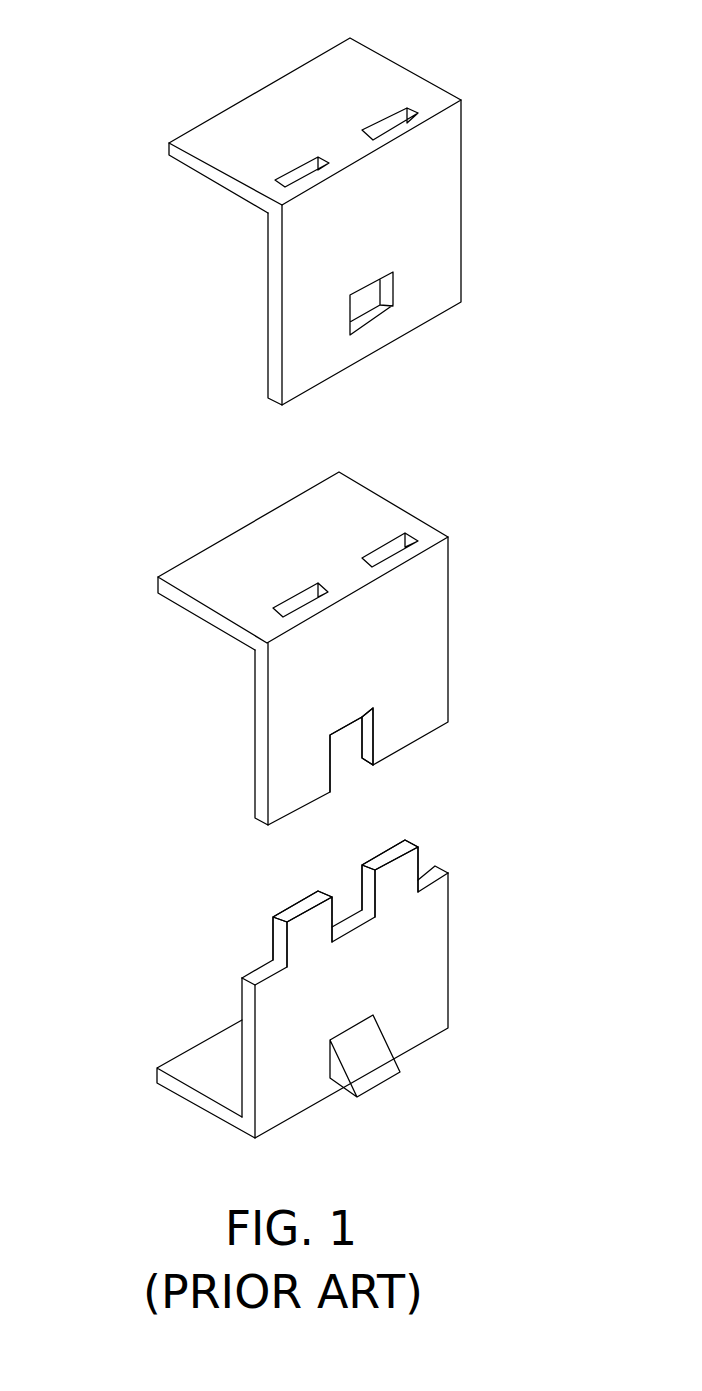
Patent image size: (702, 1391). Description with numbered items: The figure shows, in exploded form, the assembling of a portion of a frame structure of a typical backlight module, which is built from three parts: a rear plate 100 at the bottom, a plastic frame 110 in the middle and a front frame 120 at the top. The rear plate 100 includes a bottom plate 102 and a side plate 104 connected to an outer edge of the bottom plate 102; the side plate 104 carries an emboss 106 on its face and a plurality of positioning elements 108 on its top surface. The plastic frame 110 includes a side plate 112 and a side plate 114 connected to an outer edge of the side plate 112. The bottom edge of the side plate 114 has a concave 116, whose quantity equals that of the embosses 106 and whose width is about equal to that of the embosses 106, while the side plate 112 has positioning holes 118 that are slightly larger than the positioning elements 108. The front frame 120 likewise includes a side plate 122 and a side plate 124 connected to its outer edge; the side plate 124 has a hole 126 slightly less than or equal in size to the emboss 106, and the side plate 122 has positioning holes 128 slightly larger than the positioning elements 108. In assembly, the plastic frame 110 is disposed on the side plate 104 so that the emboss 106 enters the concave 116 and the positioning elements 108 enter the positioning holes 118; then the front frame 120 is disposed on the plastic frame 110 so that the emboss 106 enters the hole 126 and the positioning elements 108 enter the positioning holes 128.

The rear plate 100 is at (322, 986).
The bottom plate 102 is at (208, 1105).
The side plate 104 is at (438, 955).
The emboss 106 is at (375, 1035).
The positioning element 108 is at (412, 862).
The plastic frame 110 is at (312, 629).
The side plate 112 is at (175, 593).
The side plate 114 is at (432, 625).
The concave 116 is at (372, 737).
The positioning hole 118 is at (409, 552).
The front frame 120 is at (332, 207).
The side plate 122 is at (142, 202).
The side plate 124 is at (445, 210).
The hole 126 is at (373, 309).
The positioning hole 128 is at (408, 92).